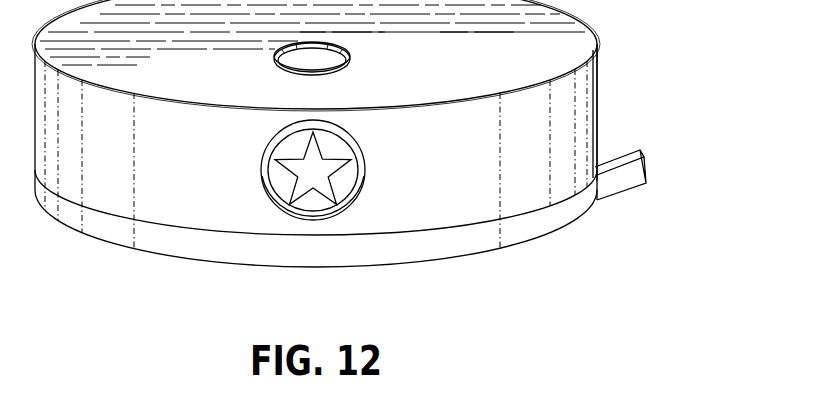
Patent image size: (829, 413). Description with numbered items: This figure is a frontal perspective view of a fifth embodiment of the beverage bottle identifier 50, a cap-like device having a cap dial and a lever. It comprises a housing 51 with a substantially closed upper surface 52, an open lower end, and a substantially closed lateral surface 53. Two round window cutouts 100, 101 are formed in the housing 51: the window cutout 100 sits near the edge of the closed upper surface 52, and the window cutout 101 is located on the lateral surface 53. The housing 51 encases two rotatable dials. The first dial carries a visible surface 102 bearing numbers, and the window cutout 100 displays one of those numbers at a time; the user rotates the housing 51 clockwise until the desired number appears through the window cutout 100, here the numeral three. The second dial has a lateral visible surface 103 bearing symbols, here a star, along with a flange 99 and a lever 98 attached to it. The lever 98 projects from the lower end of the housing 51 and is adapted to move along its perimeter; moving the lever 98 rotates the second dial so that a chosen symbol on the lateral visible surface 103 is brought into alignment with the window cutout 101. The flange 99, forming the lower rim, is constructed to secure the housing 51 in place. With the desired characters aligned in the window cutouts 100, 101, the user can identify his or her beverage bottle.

The container device 50 is at (643, 63).
The housing 51 is at (585, 127).
The closed upper surface 52 is at (431, 31).
The lateral surface 53 is at (467, 151).
The lever 98 is at (647, 175).
The flange 99 is at (180, 240).
The window cutout 100 is at (273, 60).
The window cutout 101 is at (261, 170).
The visible surface 102 is at (338, 68).
The lateral visible surface 103 is at (320, 172).